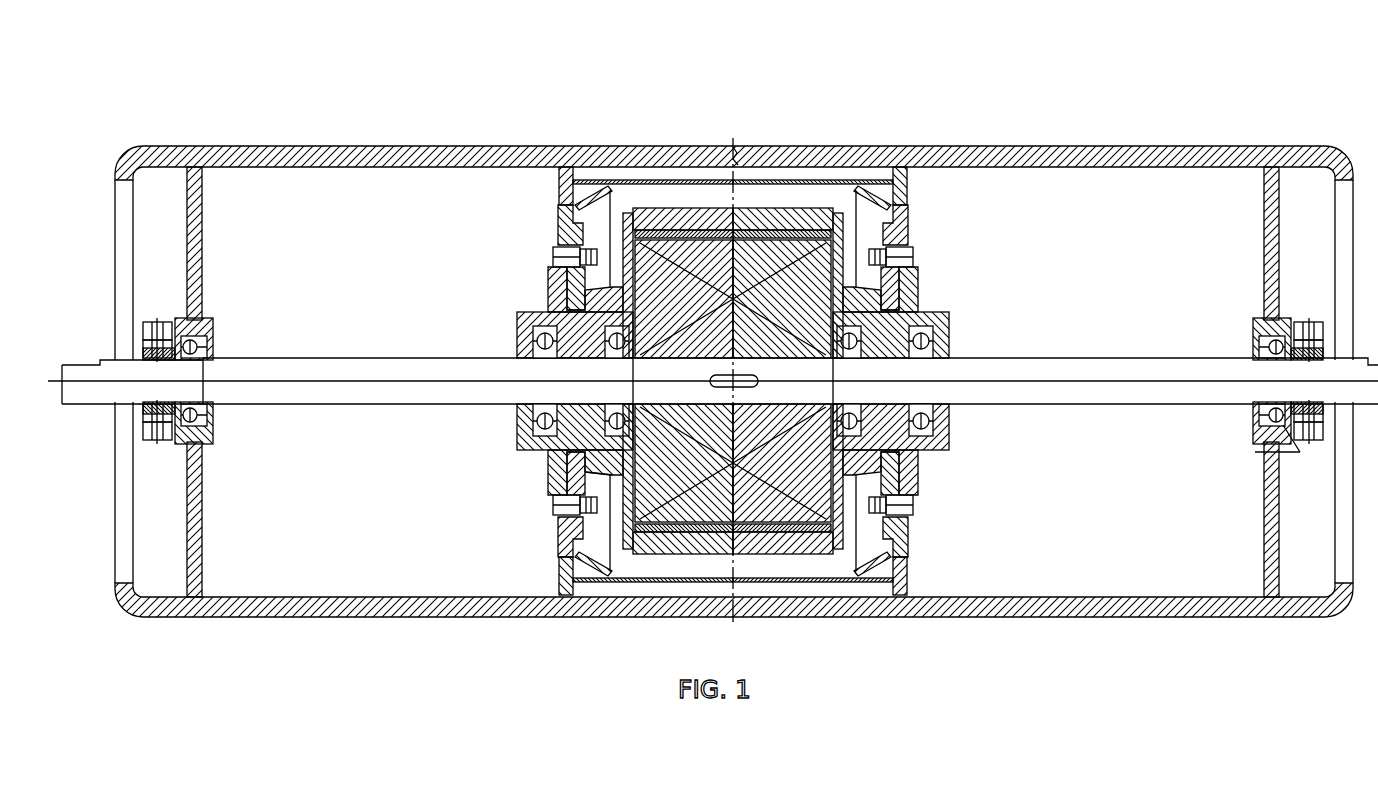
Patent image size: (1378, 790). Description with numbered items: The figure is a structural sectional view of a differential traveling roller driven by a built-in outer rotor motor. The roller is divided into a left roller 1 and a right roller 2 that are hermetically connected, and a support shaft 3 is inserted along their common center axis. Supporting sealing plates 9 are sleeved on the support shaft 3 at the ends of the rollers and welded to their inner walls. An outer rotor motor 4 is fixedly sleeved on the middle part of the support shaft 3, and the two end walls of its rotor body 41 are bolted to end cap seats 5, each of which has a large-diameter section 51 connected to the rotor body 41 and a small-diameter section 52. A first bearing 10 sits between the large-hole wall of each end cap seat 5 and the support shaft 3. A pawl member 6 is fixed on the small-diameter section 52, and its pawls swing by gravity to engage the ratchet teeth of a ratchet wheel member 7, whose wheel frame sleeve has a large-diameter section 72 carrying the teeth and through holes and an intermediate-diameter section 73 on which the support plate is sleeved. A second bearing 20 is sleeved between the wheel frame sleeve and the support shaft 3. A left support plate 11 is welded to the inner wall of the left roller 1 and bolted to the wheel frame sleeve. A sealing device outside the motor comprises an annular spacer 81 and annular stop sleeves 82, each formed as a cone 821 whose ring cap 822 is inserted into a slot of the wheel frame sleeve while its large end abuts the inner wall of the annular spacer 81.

The left roller 1 is at (663, 358).
The right roller 2 is at (940, 162).
The support shaft 3 is at (920, 378).
The outer rotor motor 4 is at (688, 208).
The rotor body 41 is at (697, 232).
The end cap seat 5 is at (557, 270).
The large-diameter section 51 is at (568, 548).
The small-diameter section 52 is at (517, 324).
The pawl member 6 is at (573, 450).
The ratchet wheel member 7 is at (548, 312).
The large-diameter section A 72 is at (578, 443).
The intermediate-diameter section A 73 is at (558, 277).
The annular spacer 81 is at (757, 182).
The annular stop sleeve 82 is at (588, 197).
The cone 821 is at (585, 583).
The ring cap 822 is at (572, 567).
The supporting sealing plate 9 is at (202, 253).
The first bearing 10 is at (563, 498).
The left support plate 11 is at (562, 225).
The second bearing 20 is at (567, 434).